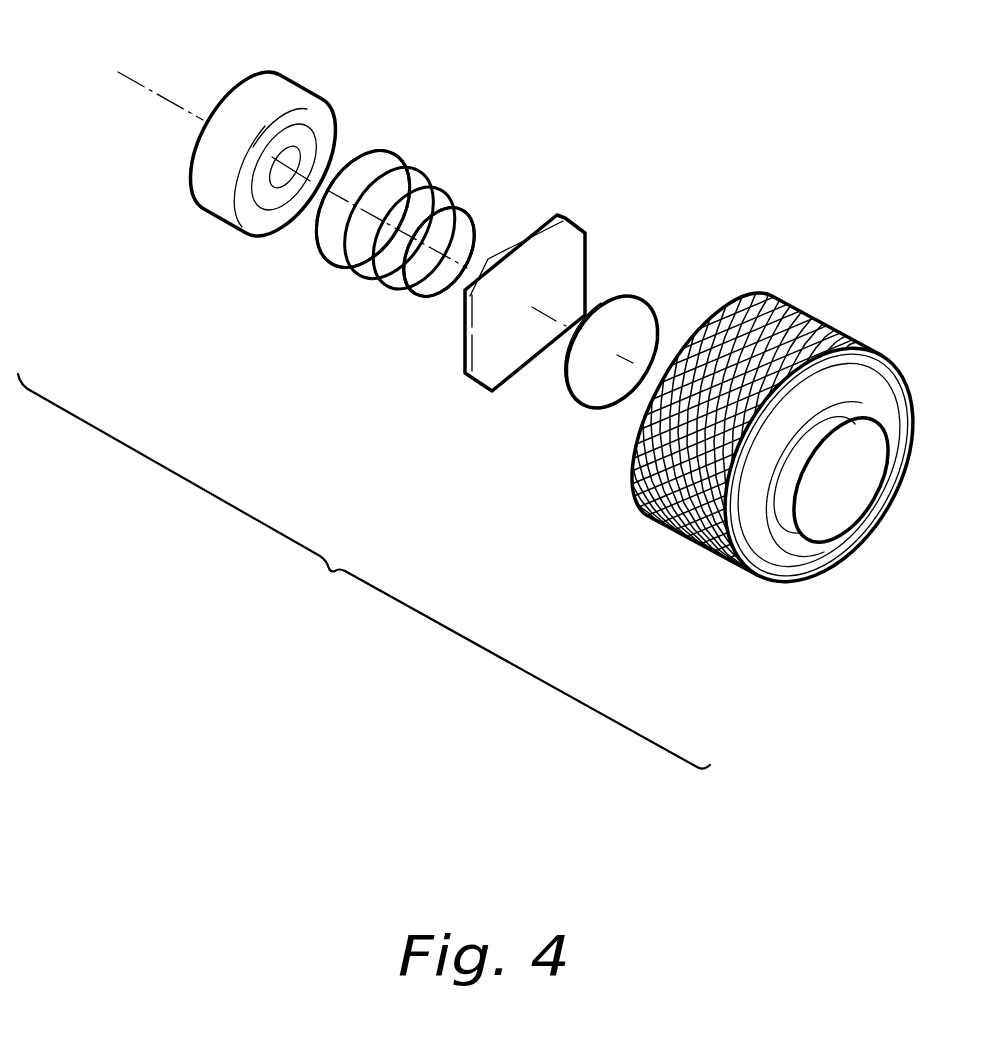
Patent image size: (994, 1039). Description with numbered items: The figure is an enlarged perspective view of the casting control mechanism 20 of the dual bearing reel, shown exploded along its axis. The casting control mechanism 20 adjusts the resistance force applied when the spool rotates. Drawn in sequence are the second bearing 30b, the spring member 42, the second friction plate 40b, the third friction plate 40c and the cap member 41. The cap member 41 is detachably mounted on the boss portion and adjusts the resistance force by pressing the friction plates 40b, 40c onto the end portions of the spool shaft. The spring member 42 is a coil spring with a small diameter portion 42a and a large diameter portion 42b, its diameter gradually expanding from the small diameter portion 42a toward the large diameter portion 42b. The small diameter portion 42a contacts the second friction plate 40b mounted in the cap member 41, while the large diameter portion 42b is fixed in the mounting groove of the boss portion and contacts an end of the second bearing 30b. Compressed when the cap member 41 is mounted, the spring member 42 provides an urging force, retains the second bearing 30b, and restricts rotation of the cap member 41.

The casting control mechanism 20 is at (754, 206).
The second bearing 30b is at (210, 200).
The second friction plate 40b is at (466, 376).
The third friction plate 40c is at (580, 396).
The cap member 41 is at (672, 527).
The spring member 42 is at (343, 267).
The small diameter portion 42a is at (470, 217).
The large diameter portion 42b is at (384, 152).